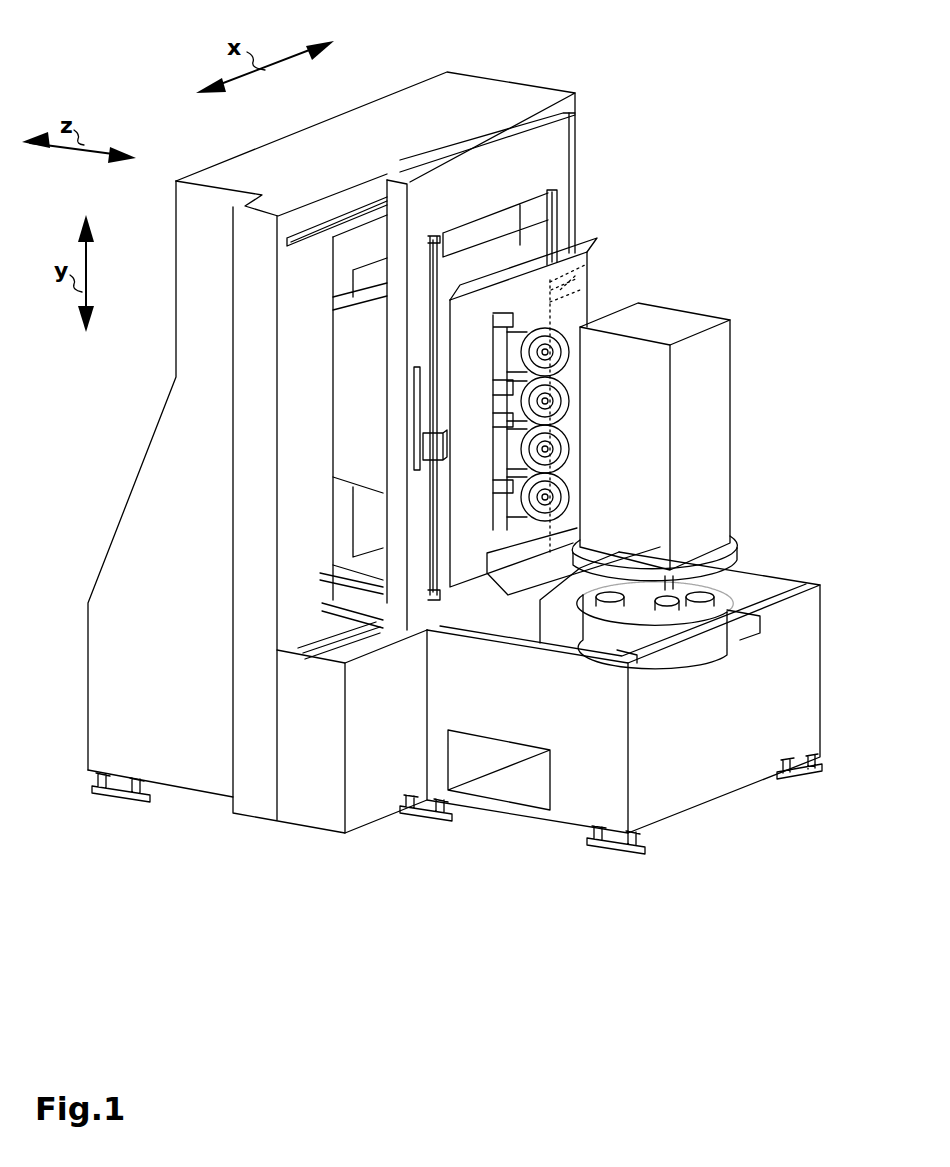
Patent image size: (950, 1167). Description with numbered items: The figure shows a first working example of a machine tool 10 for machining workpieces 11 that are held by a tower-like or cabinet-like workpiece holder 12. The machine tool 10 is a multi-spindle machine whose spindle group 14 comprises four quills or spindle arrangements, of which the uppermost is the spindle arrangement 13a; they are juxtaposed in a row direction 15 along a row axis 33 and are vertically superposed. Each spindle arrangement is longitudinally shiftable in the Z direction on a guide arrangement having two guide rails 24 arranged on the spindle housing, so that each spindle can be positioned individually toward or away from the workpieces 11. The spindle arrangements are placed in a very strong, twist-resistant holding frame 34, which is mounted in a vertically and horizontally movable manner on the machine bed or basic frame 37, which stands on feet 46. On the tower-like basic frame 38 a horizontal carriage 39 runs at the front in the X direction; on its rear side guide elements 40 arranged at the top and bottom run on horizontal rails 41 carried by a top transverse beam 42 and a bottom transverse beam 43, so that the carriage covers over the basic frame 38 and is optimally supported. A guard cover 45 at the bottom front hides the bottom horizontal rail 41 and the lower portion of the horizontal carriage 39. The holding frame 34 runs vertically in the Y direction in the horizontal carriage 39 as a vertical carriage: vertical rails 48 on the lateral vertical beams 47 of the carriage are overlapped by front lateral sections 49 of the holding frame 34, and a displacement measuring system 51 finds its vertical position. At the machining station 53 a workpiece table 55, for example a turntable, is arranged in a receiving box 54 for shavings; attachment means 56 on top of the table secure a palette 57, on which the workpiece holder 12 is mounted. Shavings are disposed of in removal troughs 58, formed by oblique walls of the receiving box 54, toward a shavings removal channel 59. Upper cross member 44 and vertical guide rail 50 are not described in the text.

The machine tool 10 is at (712, 84).
The workpiece 11 is at (668, 301).
The workpiece holder 12 is at (722, 393).
The spindle arrangement 13a is at (530, 323).
The spindle group 14 is at (562, 401).
The row direction 15 is at (570, 284).
The row axis 33 is at (564, 284).
The guide rail 24 is at (493, 330).
The holding frame 34 is at (503, 563).
The basic frame 37 is at (195, 801).
The tower-like basic frame 38 is at (133, 527).
The horizontal carriage 39 is at (566, 144).
The guide element 40 is at (380, 200).
The horizontal rail 41 is at (310, 247).
The top transverse beam 42 is at (320, 193).
The bottom transverse beam 43 is at (337, 594).
The upper cross member 44 is at (474, 80).
The guard cover 45 is at (321, 677).
The foot 46 is at (105, 794).
The lateral vertical beam 47 is at (567, 203).
The vertical rail 48 is at (532, 230).
The front lateral section 49 is at (571, 323).
The vertical guide rail 50 is at (430, 325).
The displacement measuring system 51 is at (418, 395).
The machining station 53 is at (805, 583).
The receiving box 54 is at (700, 800).
The workpiece table 55 is at (727, 590).
The attachment means 56 is at (677, 640).
The palette 57 is at (737, 547).
The removal trough 58 is at (533, 637).
The shavings removal channel 59 is at (488, 793).